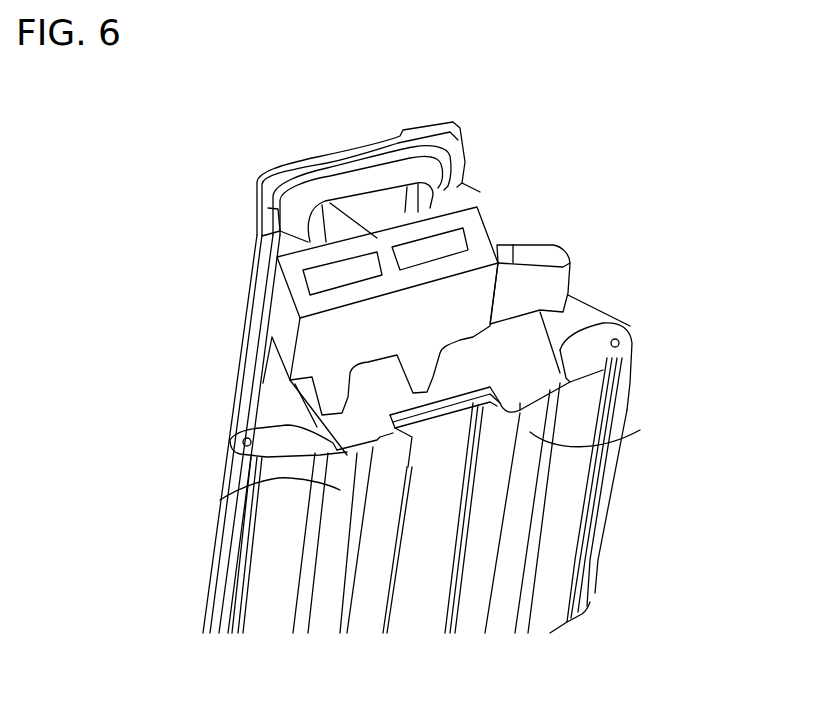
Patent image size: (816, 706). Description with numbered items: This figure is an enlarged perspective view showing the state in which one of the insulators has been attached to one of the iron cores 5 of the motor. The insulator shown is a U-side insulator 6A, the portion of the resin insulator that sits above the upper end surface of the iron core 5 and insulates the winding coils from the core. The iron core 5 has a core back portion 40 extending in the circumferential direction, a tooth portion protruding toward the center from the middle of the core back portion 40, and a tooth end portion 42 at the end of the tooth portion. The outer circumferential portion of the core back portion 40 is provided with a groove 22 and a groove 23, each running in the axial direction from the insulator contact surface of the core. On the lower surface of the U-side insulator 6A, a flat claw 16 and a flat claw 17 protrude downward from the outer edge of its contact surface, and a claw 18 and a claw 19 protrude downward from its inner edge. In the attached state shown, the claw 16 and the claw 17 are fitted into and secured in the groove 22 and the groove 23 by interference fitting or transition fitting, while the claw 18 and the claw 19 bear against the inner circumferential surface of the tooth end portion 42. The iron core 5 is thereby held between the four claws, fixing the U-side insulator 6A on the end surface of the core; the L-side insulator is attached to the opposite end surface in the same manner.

The iron core 5 is at (622, 538).
The U-side insulator 6A is at (255, 222).
The flat claw 16 is at (232, 442).
The flat claw 17 is at (618, 324).
The claw 18 is at (252, 238).
The claw 19 is at (470, 160).
The groove 22 is at (250, 495).
The groove 23 is at (580, 452).
The core back portion 40 is at (628, 385).
The tooth end portion 42 is at (276, 252).